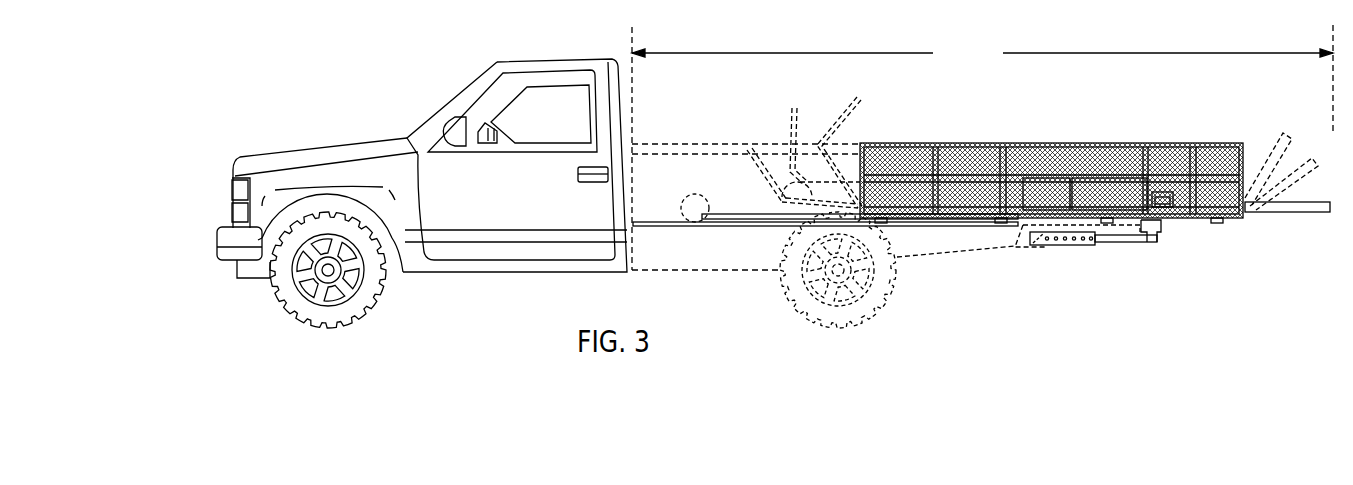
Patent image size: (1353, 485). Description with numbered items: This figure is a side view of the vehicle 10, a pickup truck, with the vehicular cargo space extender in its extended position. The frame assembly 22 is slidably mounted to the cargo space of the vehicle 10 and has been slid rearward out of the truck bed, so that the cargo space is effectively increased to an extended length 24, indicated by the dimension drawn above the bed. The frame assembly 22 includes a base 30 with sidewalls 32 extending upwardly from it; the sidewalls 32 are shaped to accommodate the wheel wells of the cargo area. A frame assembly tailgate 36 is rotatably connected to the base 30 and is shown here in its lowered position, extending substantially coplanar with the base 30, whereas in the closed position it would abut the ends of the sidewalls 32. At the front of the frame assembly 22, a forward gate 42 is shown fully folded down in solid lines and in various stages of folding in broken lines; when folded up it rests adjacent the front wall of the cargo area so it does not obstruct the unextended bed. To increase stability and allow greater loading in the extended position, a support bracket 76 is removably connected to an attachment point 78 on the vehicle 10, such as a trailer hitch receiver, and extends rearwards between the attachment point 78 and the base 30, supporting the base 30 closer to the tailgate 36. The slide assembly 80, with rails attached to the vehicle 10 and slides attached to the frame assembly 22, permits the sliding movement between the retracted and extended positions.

The vehicle 10 is at (310, 358).
The frame assembly 22 is at (982, 234).
The extended length 24 is at (833, 53).
The base 30 is at (1051, 187).
The sidewalls 32 is at (1187, 145).
The frame assembly tailgate 36 is at (1285, 205).
The forward gate 42 is at (744, 214).
The support bracket 76 is at (1142, 243).
The attachment point 78 is at (1060, 247).
The slide assembly 80 is at (736, 207).